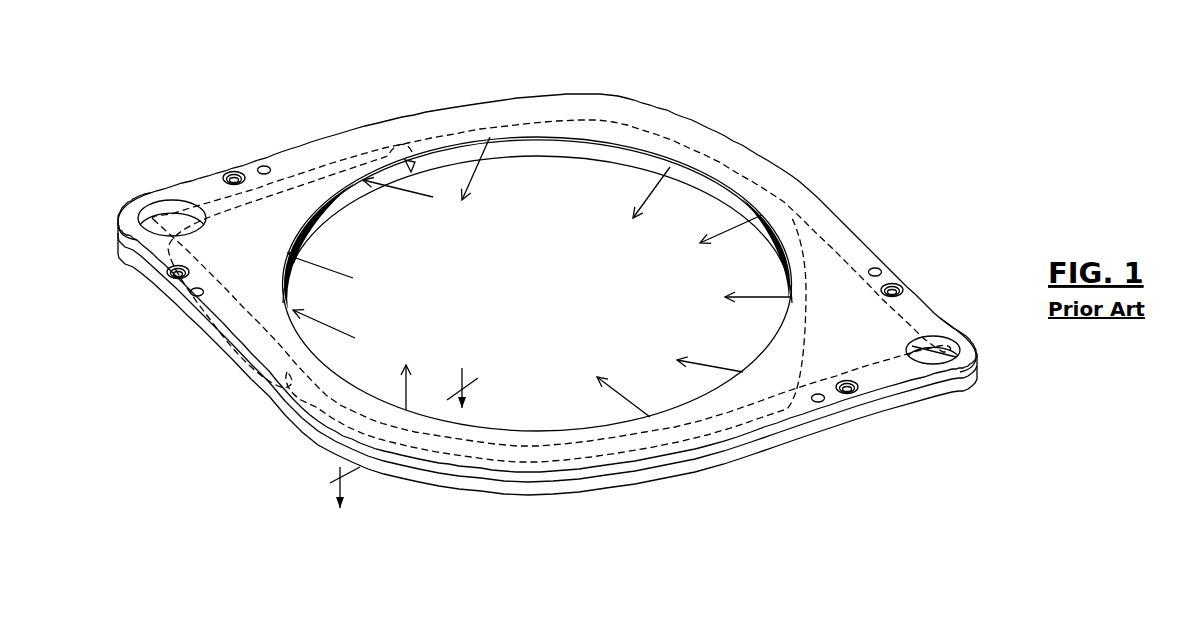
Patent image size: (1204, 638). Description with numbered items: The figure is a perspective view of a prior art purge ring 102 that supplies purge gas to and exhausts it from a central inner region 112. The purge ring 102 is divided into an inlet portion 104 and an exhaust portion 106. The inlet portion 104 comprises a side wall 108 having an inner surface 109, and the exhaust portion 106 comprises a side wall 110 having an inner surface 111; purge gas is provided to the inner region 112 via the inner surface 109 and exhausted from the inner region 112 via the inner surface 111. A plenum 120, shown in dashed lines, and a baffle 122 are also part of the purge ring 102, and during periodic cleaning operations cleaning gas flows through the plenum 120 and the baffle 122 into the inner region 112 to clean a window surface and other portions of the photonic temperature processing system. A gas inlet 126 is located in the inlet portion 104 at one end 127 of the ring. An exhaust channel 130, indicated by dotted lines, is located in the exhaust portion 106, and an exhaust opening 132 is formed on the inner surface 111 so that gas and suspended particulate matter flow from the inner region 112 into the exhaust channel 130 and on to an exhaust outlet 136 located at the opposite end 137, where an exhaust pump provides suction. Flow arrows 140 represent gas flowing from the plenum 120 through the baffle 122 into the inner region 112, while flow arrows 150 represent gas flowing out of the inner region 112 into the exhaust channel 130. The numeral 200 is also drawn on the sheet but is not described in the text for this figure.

The purge ring 102 is at (326, 60).
The inlet portion 104 is at (768, 170).
The exhaust portion 106 is at (313, 157).
The side wall 108 is at (703, 122).
The inner surface 109 is at (708, 198).
The side wall 110 is at (378, 123).
The inner surface 111 is at (353, 198).
The inner region 112 is at (537, 284).
The plenum 120 is at (603, 123).
The baffle 122 is at (567, 145).
The gas inlet 126 is at (942, 350).
The end 127 is at (942, 330).
The exhaust channel 130 is at (133, 263).
The exhaust opening 132 is at (323, 210).
The exhaust outlet 136 is at (165, 208).
The end 137 is at (185, 178).
The flow arrows 140 is at (476, 177).
The flow arrows 150 is at (437, 200).
The flange assembly of FIG. 2 200 is at (327, 634).